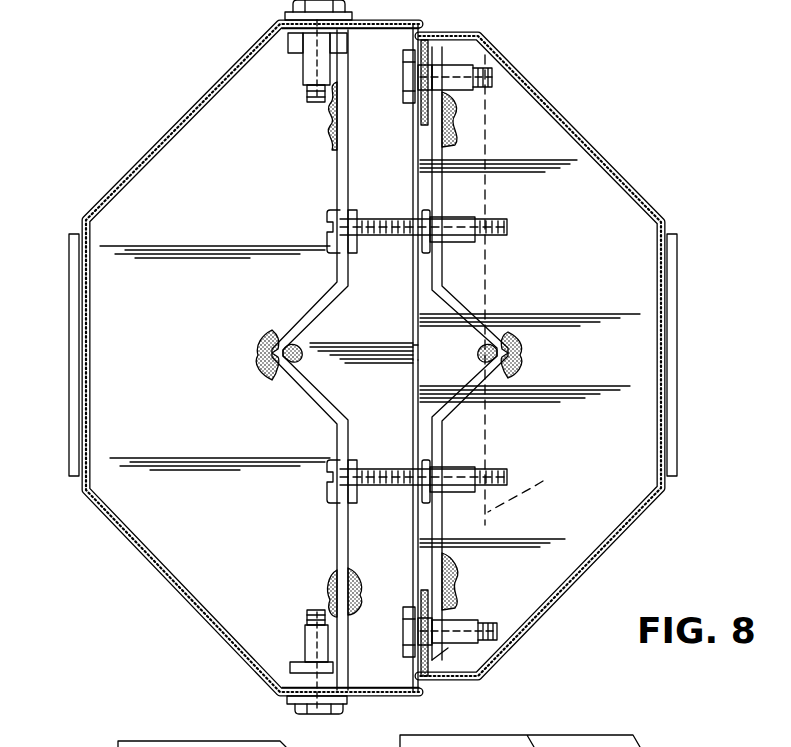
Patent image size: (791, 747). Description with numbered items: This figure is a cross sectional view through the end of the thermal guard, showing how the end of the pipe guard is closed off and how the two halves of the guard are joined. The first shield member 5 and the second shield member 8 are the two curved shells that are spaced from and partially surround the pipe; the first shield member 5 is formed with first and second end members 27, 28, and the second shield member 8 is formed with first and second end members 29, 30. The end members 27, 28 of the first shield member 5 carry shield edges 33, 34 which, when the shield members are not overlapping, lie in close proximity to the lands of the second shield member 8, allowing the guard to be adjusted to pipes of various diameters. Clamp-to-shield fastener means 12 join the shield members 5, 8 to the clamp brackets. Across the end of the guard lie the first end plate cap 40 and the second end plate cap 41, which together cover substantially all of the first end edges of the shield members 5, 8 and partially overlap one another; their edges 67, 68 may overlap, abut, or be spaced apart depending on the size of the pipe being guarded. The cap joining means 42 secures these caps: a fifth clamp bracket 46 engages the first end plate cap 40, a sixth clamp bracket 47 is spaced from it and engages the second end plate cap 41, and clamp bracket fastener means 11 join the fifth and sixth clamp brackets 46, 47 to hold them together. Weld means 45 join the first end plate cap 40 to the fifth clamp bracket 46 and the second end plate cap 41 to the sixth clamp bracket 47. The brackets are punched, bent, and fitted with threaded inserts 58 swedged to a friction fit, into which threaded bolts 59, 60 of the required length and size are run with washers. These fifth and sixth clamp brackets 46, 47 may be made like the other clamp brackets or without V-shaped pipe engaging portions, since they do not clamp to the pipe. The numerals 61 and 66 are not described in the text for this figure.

The first shield member 5 is at (181, 147).
The second shield member 8 is at (609, 185).
The clamp bracket fastener means 11 is at (384, 243).
The clamp-to-shield fastener means 12 is at (297, 66).
The first end member 27 is at (382, 30).
The second end member 28 is at (383, 697).
The first end member 29 is at (414, 118).
The second end member 30 is at (420, 590).
The shield edge 33 is at (420, 24).
The shield edge 34 is at (421, 688).
The first end plate cap 40 is at (129, 158).
The second end plate cap 41 is at (576, 114).
The cap joining means 42 is at (539, 267).
The weld means 45 is at (318, 142).
The fifth clamp bracket 46 is at (332, 181).
The sixth clamp bracket 47 is at (458, 191).
The threaded insert 58 is at (298, 74).
The threaded bolt 59 is at (360, 222).
The threaded bolt 60 is at (305, 98).
The adjacent figure element 61 is at (569, 738).
The adjacent figure element 66 is at (161, 738).
The edge 67 is at (531, 290).
The edge 68 is at (406, 374).